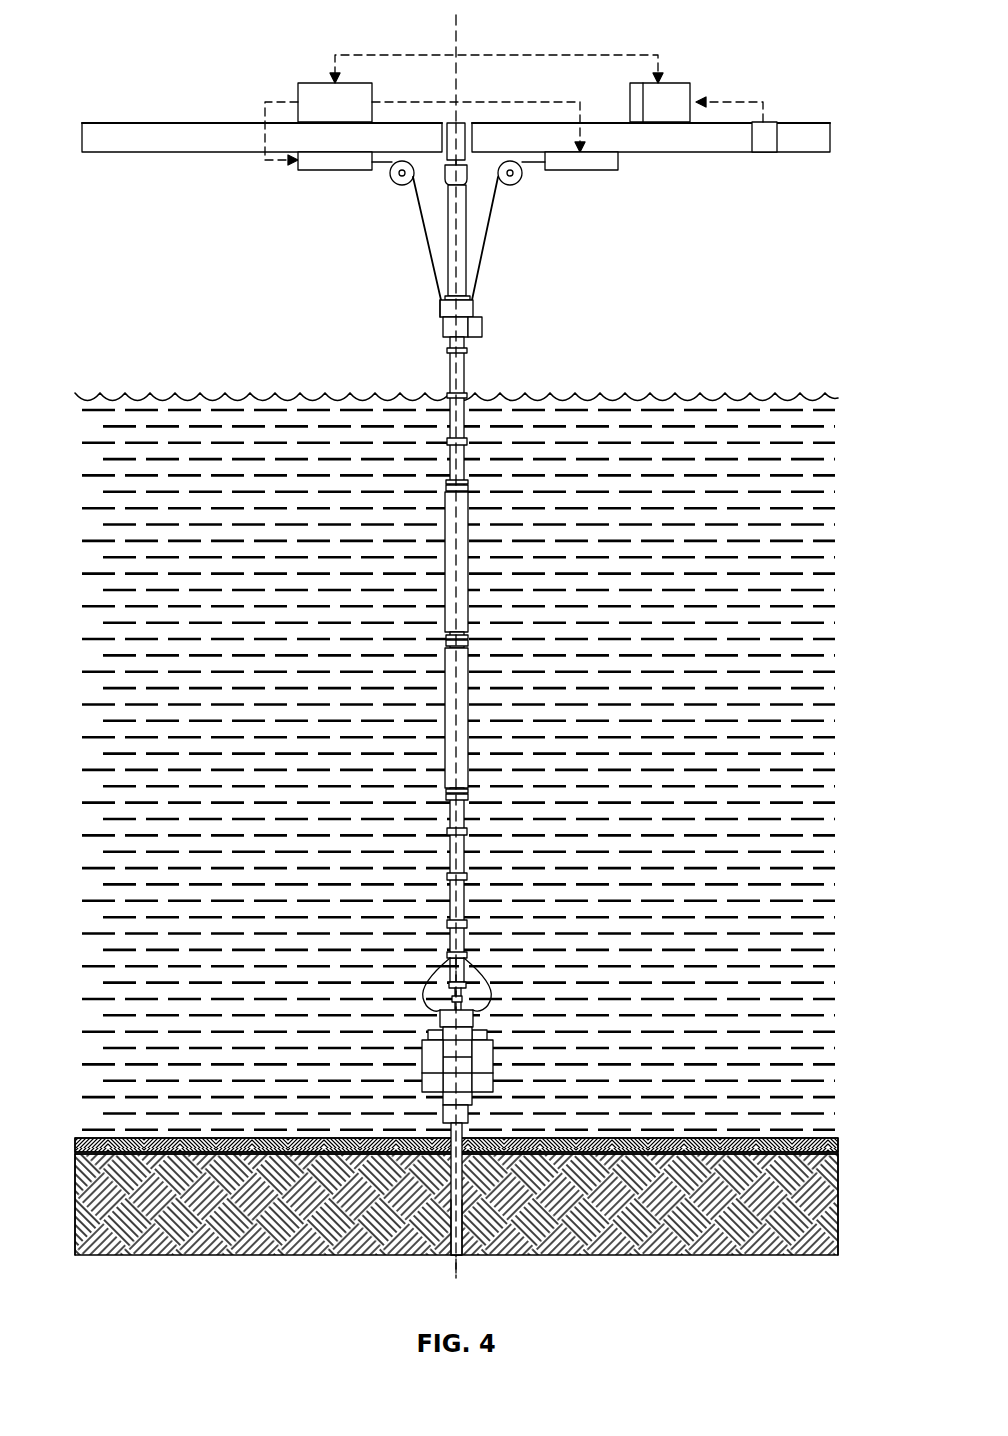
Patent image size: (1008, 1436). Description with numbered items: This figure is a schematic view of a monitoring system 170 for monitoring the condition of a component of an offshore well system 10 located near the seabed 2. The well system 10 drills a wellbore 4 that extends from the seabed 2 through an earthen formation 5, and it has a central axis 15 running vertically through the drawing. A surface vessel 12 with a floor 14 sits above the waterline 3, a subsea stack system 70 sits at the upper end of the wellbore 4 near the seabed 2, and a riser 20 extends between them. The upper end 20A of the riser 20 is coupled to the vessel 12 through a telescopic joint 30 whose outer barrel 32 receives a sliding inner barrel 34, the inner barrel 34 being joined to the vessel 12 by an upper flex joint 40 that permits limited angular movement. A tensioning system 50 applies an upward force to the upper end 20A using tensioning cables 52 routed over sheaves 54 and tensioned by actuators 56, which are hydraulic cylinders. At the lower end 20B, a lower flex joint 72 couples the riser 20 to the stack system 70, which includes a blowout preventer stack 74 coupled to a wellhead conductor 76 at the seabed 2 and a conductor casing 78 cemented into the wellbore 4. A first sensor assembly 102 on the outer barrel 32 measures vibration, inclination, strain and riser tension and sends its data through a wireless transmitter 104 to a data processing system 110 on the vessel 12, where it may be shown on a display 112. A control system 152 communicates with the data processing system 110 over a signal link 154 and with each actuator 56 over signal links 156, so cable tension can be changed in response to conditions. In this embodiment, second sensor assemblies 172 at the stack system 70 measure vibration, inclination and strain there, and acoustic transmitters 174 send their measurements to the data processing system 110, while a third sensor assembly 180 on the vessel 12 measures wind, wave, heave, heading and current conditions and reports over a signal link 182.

The seabed 2 is at (672, 1137).
The waterline 3 is at (662, 396).
The wellbore 4 is at (466, 1232).
The earthen formation 5 is at (820, 1192).
The offshore well system 10 is at (430, 91).
The surface vessel 12 is at (107, 138).
The support structure or floor 14 is at (456, 108).
The central or longitudinal axis 15 is at (458, 80).
The riser 20 is at (450, 365).
The upper end of riser 20A is at (465, 350).
The lower end of riser 20B is at (445, 982).
The telescopic joint 30 is at (473, 308).
The outer barrel 32 is at (440, 308).
The inner barrel 34 is at (467, 235).
The upper flex joint 40 is at (463, 175).
The tensioning system 50 is at (464, 226).
The tensioning cables 52 is at (432, 255).
The sheaves 54 is at (394, 181).
The actuators 56 is at (318, 165).
The subsea stack system 70 is at (421, 1048).
The lower flex joint 72 is at (470, 1000).
The blowout preventer stack 74 is at (470, 1085).
The wellhead conductor 76 is at (470, 1112).
The conductor casing 78 is at (450, 1155).
The first sensor assembly 102 is at (443, 325).
The wireless transmitter 104 is at (482, 332).
The data processing system 110 is at (677, 95).
The display 112 is at (640, 97).
The control system 152 is at (319, 92).
The signal link 154 is at (400, 52).
The signal links 156 is at (264, 118).
The monitoring system 170 is at (693, 151).
The second sensor assemblies 172 is at (430, 1062).
The acoustic transmitters 174 is at (432, 1036).
The third sensor assembly 180 is at (766, 148).
The signal link 182 is at (733, 100).